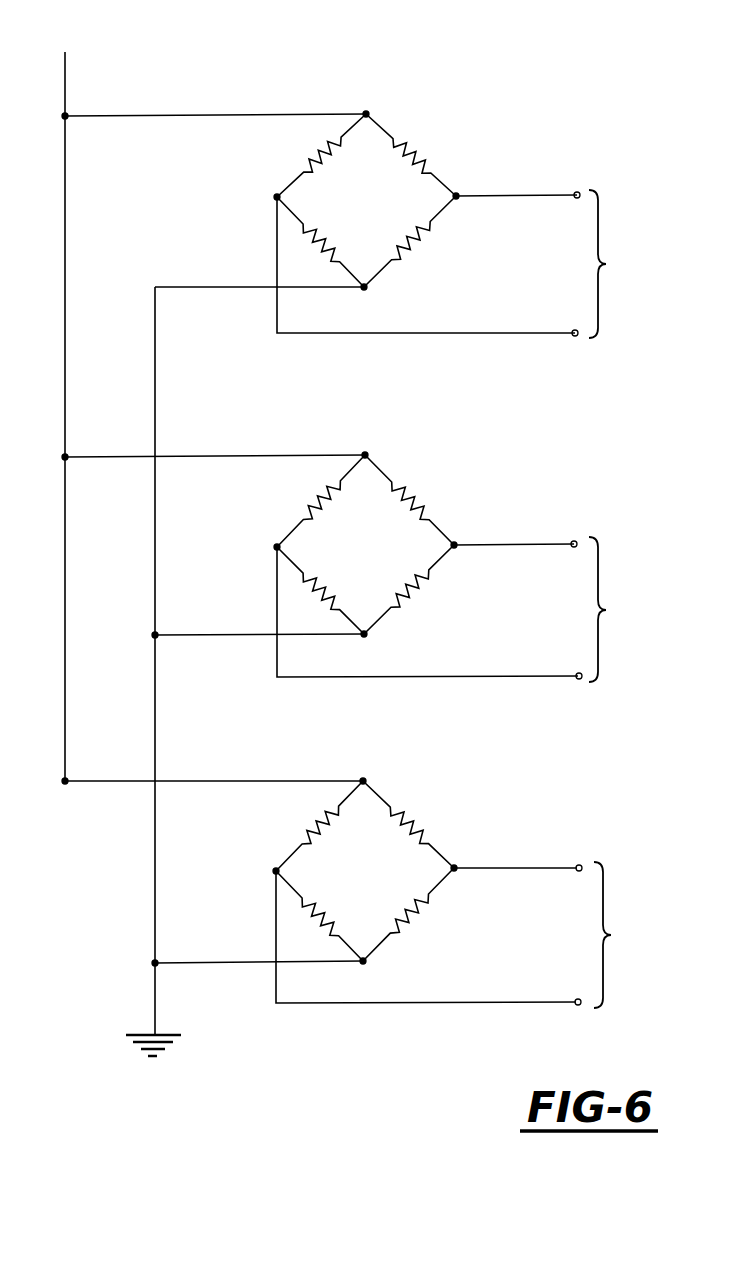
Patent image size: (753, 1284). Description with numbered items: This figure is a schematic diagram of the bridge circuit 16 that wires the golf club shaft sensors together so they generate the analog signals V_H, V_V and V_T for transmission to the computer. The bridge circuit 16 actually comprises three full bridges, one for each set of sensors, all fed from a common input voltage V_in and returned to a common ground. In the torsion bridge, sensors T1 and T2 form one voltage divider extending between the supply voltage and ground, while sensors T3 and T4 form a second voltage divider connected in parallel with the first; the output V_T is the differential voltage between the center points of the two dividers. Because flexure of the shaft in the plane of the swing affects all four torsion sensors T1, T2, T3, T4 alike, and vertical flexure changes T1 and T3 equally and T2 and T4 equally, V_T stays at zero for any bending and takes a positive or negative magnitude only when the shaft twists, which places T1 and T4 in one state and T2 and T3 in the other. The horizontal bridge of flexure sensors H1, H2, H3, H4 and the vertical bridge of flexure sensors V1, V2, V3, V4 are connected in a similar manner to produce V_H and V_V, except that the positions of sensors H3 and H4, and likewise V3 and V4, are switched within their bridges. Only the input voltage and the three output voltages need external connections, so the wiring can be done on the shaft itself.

The bridge circuit 16 is at (556, 108).
The flexure sensor H1 is at (318, 155).
The flexure sensor H2 is at (322, 242).
The flexure sensor H3 is at (410, 242).
The flexure sensor H4 is at (416, 155).
The flexure sensor V1 is at (318, 501).
The flexure sensor V2 is at (320, 590).
The flexure sensor V3 is at (410, 589).
The flexure sensor V4 is at (409, 500).
The torsion sensor T1 is at (317, 826).
The torsion sensor T2 is at (319, 916).
The torsion sensor T3 is at (408, 824).
The torsion sensor T4 is at (408, 914).